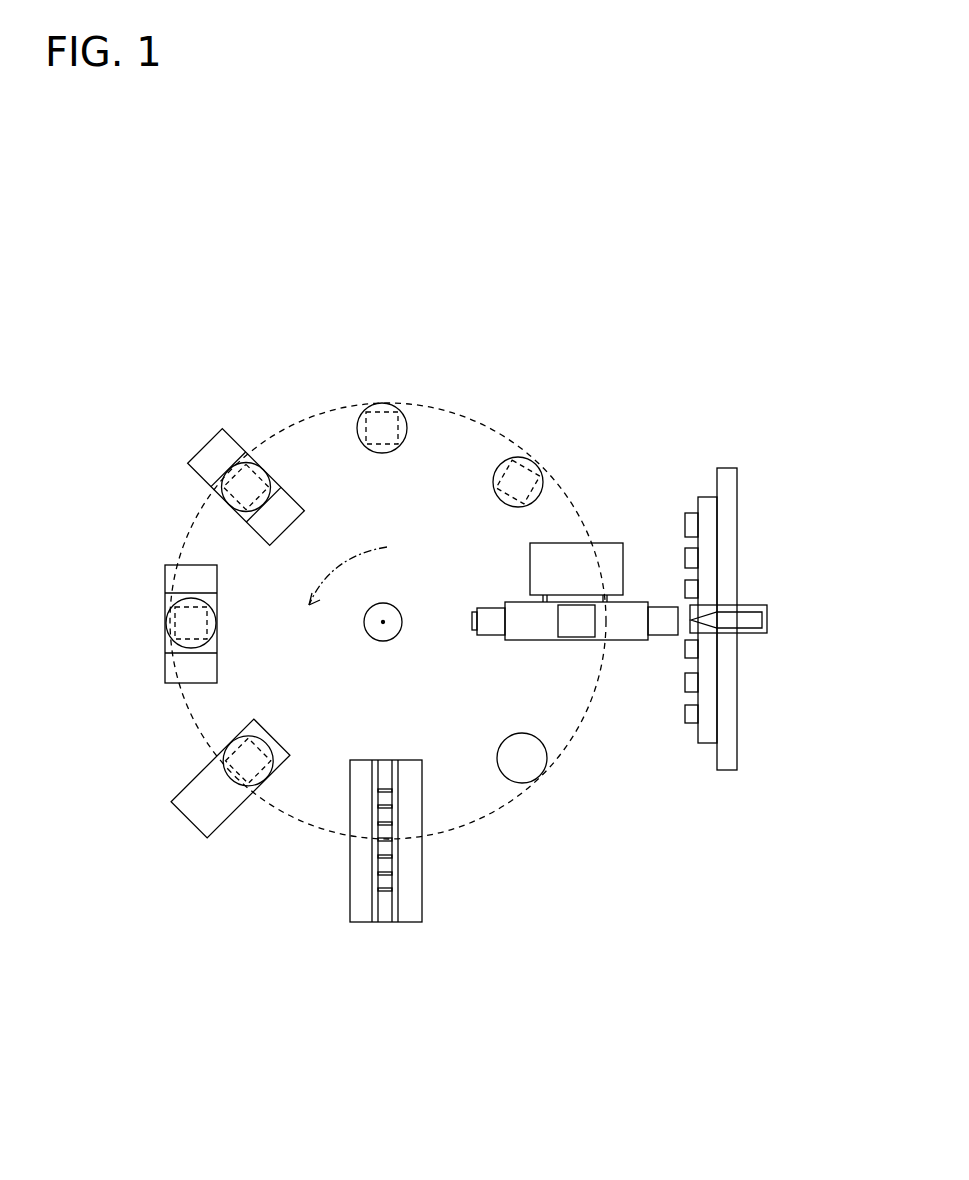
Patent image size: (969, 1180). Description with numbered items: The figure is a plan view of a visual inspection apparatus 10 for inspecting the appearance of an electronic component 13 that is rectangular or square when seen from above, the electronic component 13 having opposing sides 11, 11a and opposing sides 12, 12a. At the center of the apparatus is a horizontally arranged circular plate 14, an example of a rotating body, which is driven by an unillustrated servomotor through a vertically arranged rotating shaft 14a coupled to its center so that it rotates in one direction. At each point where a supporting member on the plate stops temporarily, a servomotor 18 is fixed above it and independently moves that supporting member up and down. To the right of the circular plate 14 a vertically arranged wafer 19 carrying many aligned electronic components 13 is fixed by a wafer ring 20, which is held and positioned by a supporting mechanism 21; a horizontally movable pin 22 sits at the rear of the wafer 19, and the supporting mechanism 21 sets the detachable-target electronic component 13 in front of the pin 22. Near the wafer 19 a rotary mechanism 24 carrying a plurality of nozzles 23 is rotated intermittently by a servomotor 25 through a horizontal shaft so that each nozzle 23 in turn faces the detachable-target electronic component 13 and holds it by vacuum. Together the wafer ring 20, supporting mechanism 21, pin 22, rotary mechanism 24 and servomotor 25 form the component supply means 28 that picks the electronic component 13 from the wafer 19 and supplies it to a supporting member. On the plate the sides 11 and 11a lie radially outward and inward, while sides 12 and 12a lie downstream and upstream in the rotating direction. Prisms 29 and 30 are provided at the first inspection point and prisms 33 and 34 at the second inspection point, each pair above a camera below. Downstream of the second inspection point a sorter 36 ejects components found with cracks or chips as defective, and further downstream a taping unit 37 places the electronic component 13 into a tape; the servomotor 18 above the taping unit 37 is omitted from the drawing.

The visual inspection apparatus 10 is at (86, 280).
The side 11 is at (248, 468).
The side 11a is at (232, 527).
The side 12 is at (205, 482).
The side 12a is at (266, 470).
The electronic component 13 is at (390, 405).
The circular plate 14 is at (552, 492).
The rotating shaft 14a is at (392, 632).
The servomotor 18 is at (254, 455).
The wafer 19 is at (692, 722).
The wafer ring 20 is at (708, 745).
The supporting mechanism 21 is at (732, 748).
The pin 22 is at (750, 617).
The nozzle 23 is at (492, 618).
The rotary mechanism 24 is at (625, 648).
The servomotor 25 is at (582, 560).
The component supply means 28 is at (646, 575).
The prism 29 is at (216, 455).
The prism 30 is at (278, 495).
The prism 33 is at (167, 680).
The prism 34 is at (178, 565).
The sorter 36 is at (215, 805).
The taping unit 37 is at (409, 908).